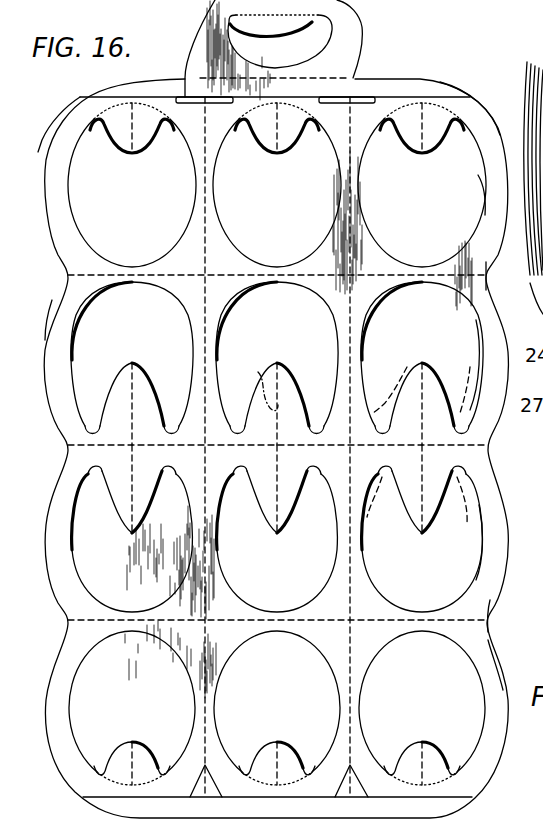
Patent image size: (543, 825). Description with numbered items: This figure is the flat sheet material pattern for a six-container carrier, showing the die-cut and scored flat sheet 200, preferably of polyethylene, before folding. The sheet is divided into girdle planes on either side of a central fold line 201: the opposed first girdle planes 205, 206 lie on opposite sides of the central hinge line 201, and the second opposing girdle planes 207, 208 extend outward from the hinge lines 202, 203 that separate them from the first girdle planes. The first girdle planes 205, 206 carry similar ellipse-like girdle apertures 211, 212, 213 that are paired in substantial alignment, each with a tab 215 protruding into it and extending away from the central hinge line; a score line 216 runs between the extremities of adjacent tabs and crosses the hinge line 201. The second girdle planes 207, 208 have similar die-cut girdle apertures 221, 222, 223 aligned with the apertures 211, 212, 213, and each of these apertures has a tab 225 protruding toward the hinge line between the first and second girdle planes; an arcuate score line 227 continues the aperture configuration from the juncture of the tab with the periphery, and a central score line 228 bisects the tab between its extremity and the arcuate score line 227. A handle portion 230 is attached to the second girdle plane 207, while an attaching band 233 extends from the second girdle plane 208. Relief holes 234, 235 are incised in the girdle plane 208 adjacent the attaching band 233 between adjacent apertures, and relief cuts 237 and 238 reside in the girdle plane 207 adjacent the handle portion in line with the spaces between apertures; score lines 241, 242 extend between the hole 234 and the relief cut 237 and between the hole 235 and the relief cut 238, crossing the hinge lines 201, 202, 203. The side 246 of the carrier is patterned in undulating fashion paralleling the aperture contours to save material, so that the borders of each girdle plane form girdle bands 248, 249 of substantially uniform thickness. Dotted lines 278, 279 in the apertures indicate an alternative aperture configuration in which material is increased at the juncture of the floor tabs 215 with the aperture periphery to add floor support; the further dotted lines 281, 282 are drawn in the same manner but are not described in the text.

The flat sheet 200 is at (90, 81).
The girdle band 249 is at (66, 122).
The second girdle plane 207 is at (478, 124).
The handle portion 230 is at (204, 20).
The relief cut 238 is at (186, 78).
The relief cut 237 is at (357, 100).
The girdle aperture 223 is at (194, 203).
The girdle aperture 222 is at (340, 187).
The girdle aperture 221 is at (483, 197).
The arcuate score line 227 is at (442, 107).
The central score line 228 is at (419, 125).
The tab 225 is at (269, 155).
The girdle band 248 is at (488, 190).
The hinge line 202 is at (480, 268).
The side 246 is at (50, 322).
The girdle aperture 213 is at (100, 298).
The girdle aperture 212 is at (232, 311).
The score line 216 is at (258, 378).
The girdle aperture 211 is at (448, 292).
The tab 215 is at (417, 360).
The first girdle plane 205 is at (483, 323).
The dotted line 278 is at (386, 385).
The dotted line 279 is at (459, 385).
The score line 241 is at (352, 308).
The central fold line 201 is at (448, 445).
The score line 242 is at (207, 468).
The post 282 is at (384, 506).
The post 281 is at (455, 510).
The first girdle plane 206 is at (493, 538).
The hinge line 203 is at (457, 615).
The second girdle plane 208 is at (480, 653).
The relief hole 235 is at (200, 788).
The relief hole 234 is at (347, 788).
The attaching band 233 is at (447, 802).